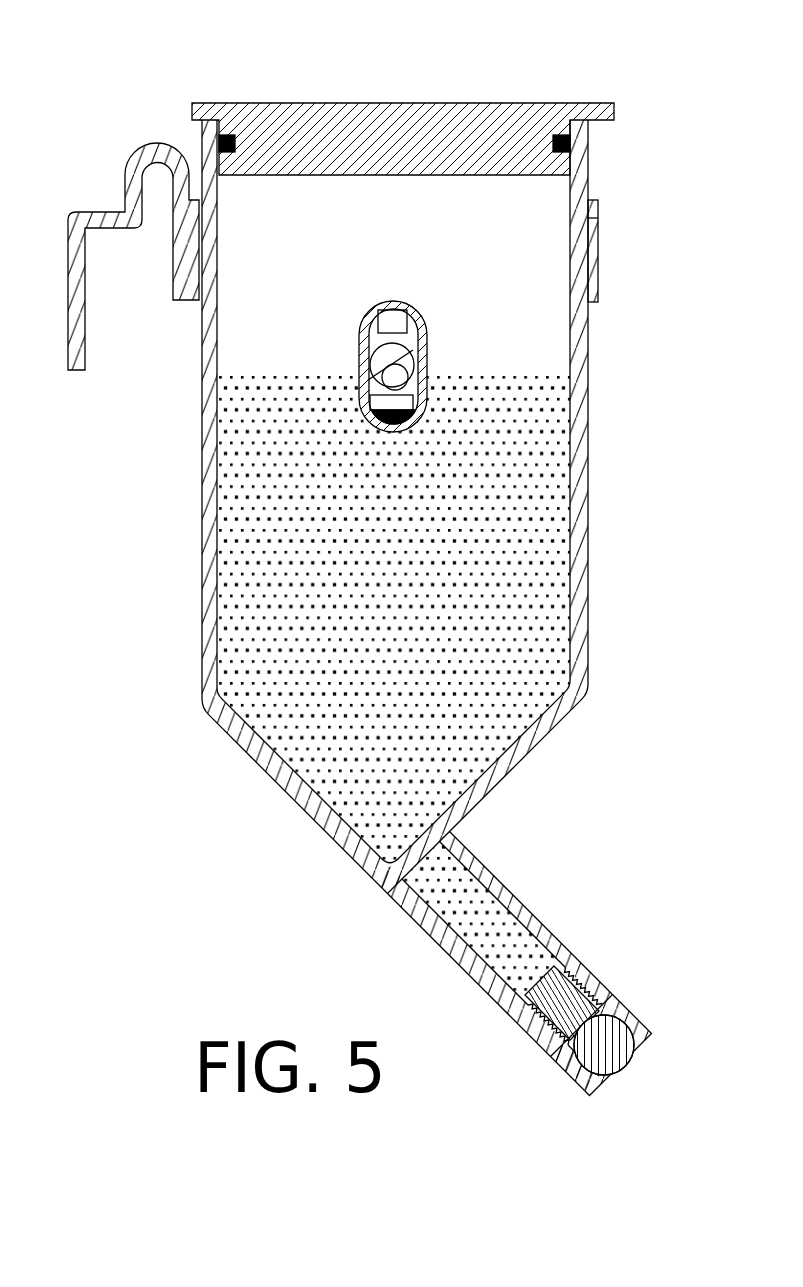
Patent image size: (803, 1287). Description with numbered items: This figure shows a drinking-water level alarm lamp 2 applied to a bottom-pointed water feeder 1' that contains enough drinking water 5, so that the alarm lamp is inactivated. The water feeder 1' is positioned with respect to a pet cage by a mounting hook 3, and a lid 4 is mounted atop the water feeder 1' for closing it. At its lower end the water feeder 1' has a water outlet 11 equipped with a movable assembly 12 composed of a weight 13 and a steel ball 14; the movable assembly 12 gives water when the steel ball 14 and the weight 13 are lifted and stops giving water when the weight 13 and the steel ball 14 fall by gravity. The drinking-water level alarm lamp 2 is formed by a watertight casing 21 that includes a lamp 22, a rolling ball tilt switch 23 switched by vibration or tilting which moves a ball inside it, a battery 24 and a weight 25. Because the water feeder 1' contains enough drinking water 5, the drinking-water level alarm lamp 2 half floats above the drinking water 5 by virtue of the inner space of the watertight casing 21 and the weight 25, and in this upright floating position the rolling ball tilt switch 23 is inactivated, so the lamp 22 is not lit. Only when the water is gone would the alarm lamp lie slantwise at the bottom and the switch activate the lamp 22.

The water feeder 1' is at (460, 605).
The drinking-water level alarm lamp 2 is at (346, 335).
The mounting hook 3 is at (78, 330).
The lid 4 is at (400, 118).
The drinking water 5 is at (262, 642).
The water outlet 11 is at (508, 900).
The movable assembly 12 is at (627, 1010).
The weight 13 is at (563, 1000).
The steel ball 14 is at (613, 1053).
The watertight casing 21 is at (413, 306).
The lamp 22 is at (392, 318).
The rolling ball tilt switch 23 is at (398, 378).
The battery 24 is at (375, 403).
The weight 25 is at (403, 425).